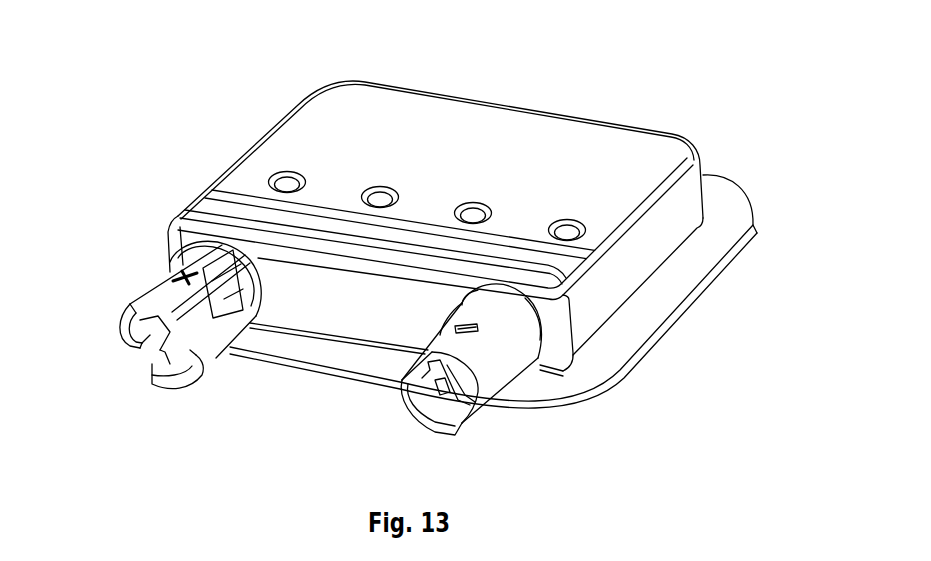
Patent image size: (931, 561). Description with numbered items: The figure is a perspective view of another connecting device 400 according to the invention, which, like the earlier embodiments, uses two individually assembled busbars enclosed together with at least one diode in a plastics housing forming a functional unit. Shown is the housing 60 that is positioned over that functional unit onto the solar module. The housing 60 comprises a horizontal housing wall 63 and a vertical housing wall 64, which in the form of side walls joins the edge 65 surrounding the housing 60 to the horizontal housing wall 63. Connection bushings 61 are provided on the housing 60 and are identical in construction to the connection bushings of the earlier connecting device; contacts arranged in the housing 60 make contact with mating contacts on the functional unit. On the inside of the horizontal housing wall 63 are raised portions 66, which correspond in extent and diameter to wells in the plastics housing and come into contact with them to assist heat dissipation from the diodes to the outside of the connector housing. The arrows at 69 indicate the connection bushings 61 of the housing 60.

The connecting device 400 is at (706, 76).
The housing 60 is at (497, 95).
The connection bushings 61 is at (210, 352).
The horizontal housing wall 63 is at (268, 160).
The vertical housing wall 64 is at (667, 237).
The edge 65 is at (677, 283).
The raised portion 66 is at (592, 234).
The connector opening 69 is at (114, 390).